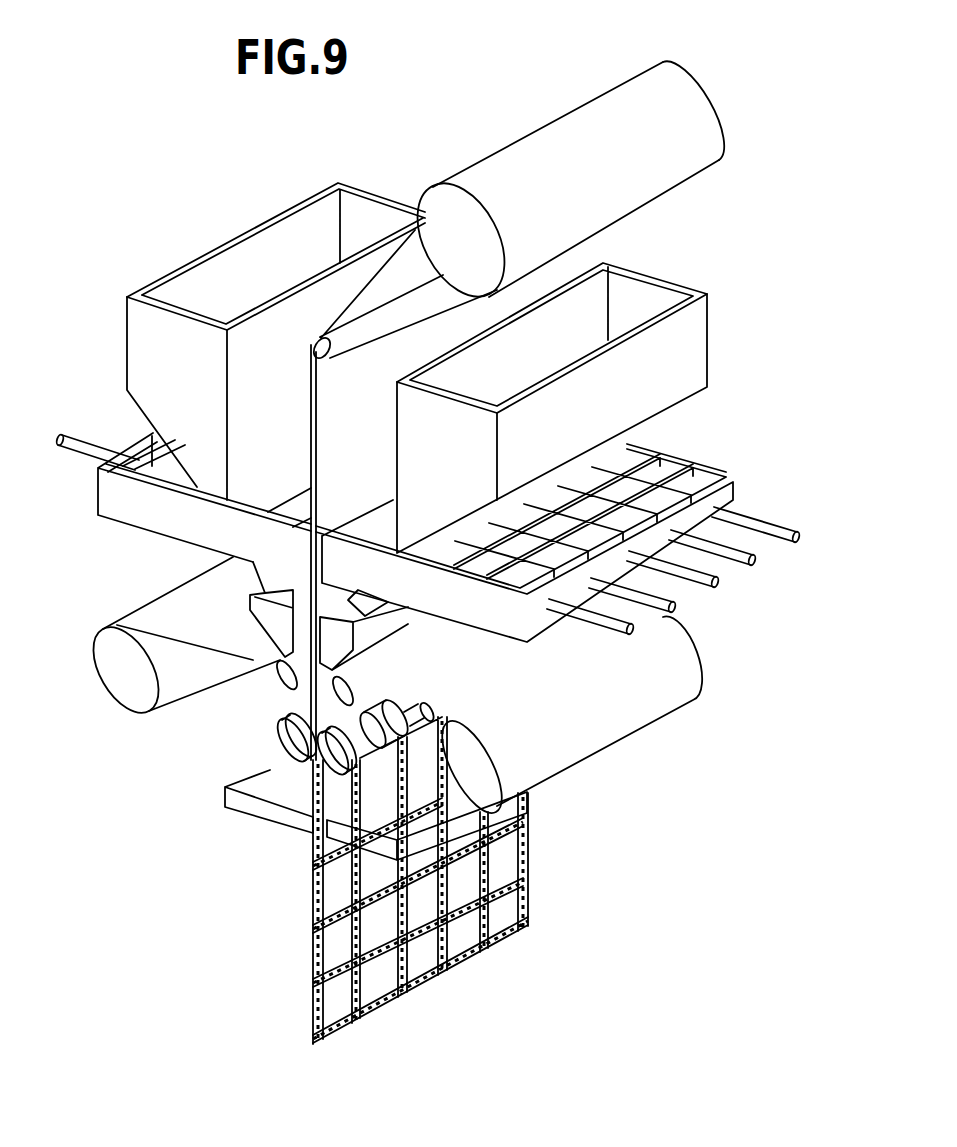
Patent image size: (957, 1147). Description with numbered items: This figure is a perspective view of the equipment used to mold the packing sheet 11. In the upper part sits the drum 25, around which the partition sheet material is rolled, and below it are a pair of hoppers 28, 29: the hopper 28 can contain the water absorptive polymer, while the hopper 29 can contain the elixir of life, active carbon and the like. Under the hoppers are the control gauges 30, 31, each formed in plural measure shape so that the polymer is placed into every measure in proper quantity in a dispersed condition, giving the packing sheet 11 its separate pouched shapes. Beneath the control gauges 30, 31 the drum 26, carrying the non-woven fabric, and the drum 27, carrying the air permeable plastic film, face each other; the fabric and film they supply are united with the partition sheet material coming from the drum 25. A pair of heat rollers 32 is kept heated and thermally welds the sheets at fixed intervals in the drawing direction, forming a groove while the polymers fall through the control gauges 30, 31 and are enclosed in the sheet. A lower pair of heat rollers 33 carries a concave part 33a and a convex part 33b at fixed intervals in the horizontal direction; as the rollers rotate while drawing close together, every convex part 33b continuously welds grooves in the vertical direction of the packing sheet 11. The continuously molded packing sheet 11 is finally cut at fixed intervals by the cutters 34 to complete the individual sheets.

The packing sheet 11 is at (537, 890).
The drum 25 is at (456, 214).
The drum 26 is at (120, 673).
The drum 27 is at (500, 787).
The hopper 28 is at (148, 357).
The hopper 29 is at (693, 356).
The control gauge 30 is at (100, 496).
The control gauge 31 is at (790, 465).
The heat roller 32 is at (280, 680).
The heat roller 33 is at (285, 746).
The concave part 33a is at (295, 717).
The convex part 33b is at (443, 703).
The cutter 34 is at (238, 800).